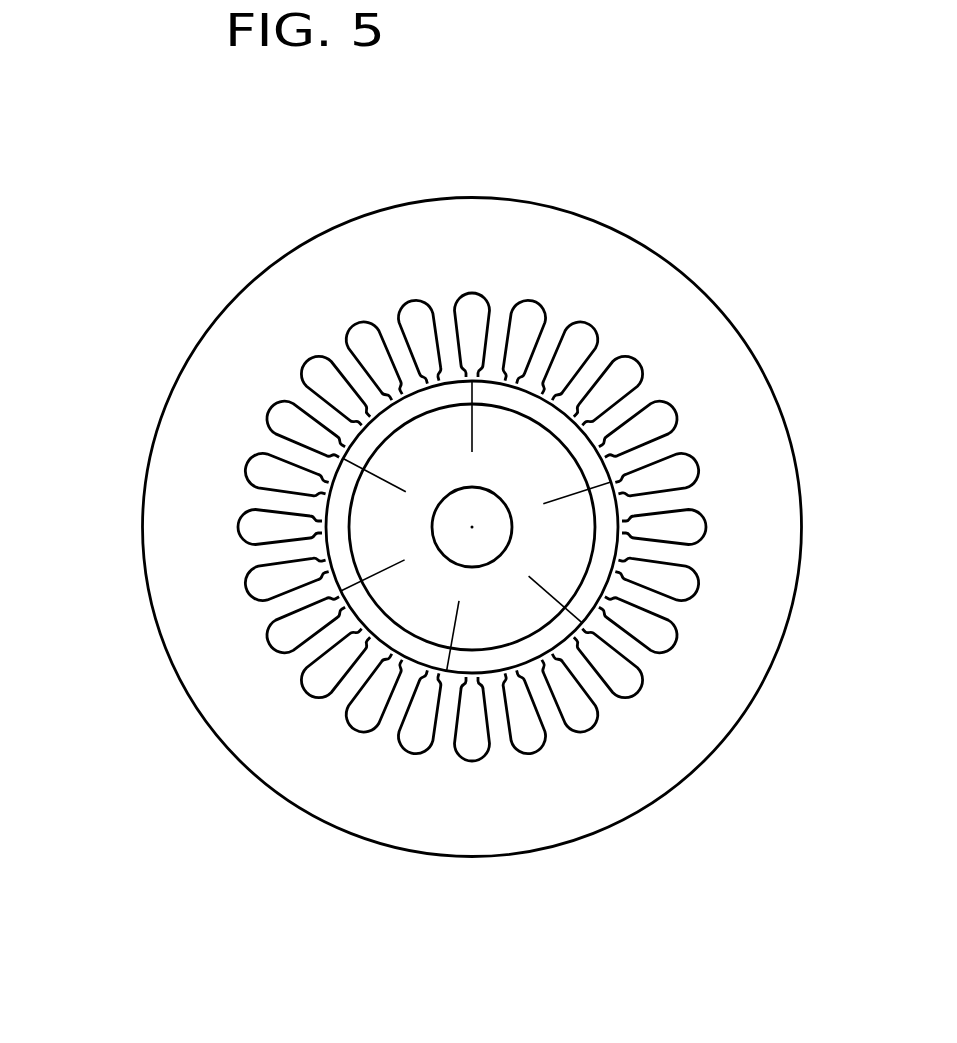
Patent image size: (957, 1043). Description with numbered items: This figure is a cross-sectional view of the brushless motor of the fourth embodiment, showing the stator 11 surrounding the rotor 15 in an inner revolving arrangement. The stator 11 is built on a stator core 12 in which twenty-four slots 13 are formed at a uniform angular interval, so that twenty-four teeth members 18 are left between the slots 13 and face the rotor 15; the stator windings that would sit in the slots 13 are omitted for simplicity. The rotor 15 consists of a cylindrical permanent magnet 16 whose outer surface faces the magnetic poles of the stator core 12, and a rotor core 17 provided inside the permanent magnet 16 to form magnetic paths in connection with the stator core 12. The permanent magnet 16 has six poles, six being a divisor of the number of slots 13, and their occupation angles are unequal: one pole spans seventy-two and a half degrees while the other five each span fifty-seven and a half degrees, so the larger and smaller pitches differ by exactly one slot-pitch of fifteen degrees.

The stator 11 is at (790, 620).
The stator core 12 is at (723, 352).
The slots 13 is at (580, 327).
The rotor 15 is at (383, 633).
The permanent magnet 16 is at (557, 633).
The rotor core 17 is at (343, 459).
The teeth members 18 is at (342, 440).